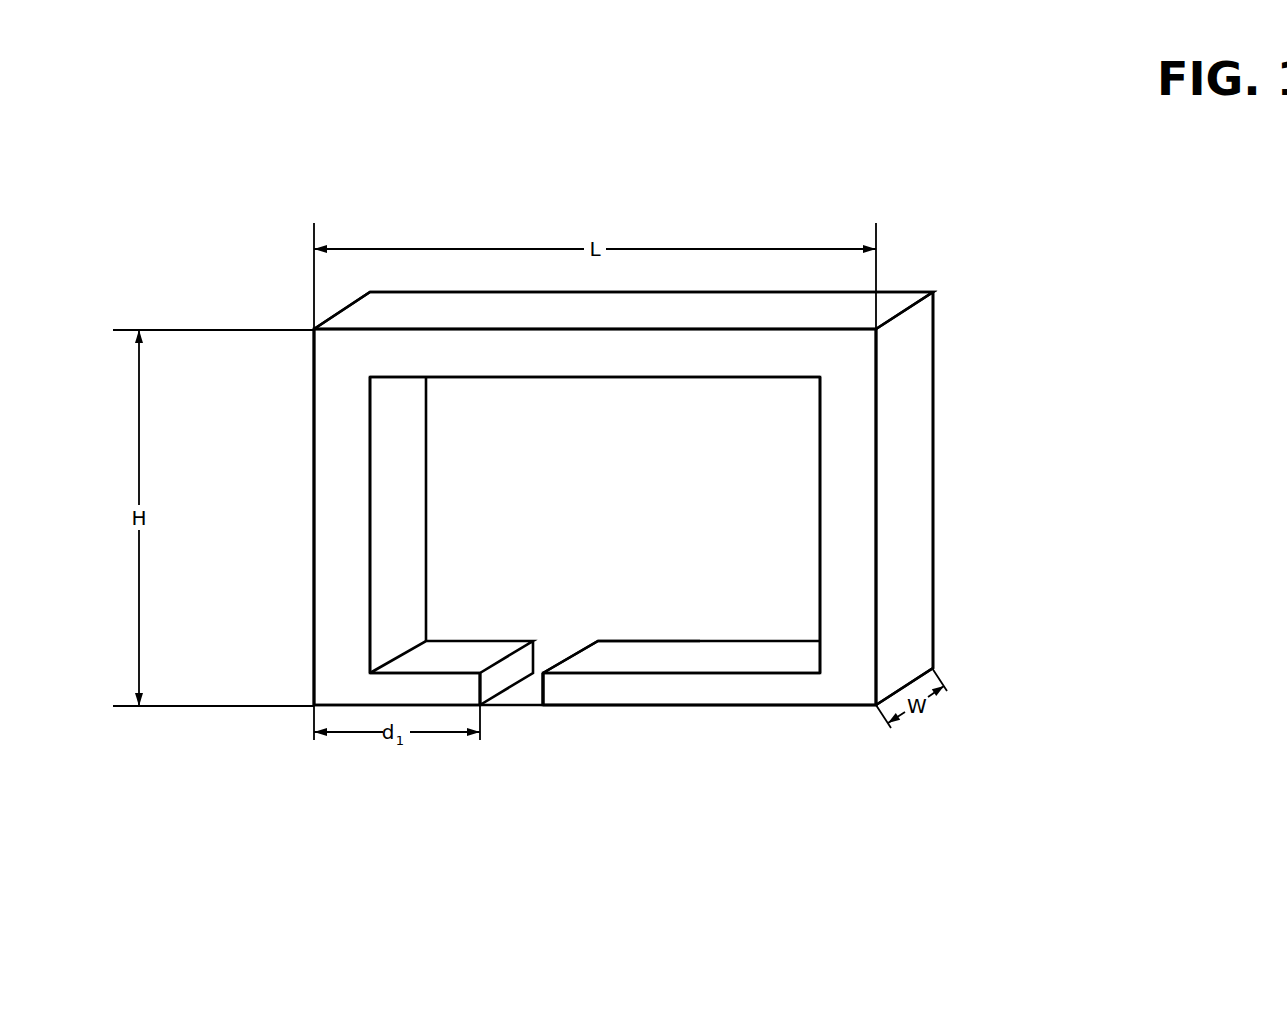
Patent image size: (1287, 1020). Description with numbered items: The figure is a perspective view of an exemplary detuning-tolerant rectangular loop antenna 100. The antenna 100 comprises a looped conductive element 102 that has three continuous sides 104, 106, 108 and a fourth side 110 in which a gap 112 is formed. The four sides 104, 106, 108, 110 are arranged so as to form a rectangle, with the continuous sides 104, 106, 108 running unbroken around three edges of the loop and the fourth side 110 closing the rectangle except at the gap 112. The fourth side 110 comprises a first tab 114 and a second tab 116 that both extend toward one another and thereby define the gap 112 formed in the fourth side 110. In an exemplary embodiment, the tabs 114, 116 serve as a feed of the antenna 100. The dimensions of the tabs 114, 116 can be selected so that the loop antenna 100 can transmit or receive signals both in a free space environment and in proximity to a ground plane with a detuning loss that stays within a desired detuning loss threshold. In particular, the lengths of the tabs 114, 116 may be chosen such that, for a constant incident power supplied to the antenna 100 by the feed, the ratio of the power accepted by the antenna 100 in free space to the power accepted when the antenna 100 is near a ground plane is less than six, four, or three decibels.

The loop antenna 100 is at (1001, 103).
The looped conductive element 102 is at (933, 367).
The first side 104 is at (913, 473).
The second side 106 is at (895, 305).
The third side 108 is at (318, 427).
The fourth side 110 is at (820, 690).
The gap 112 is at (509, 738).
The first tab 114 is at (472, 653).
The second tab 116 is at (652, 643).